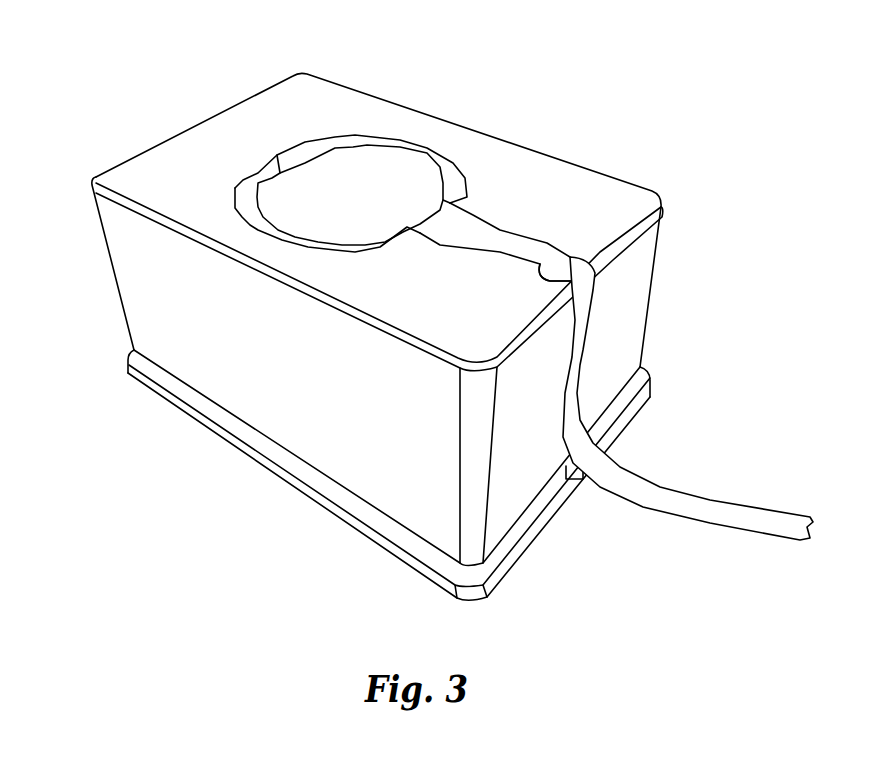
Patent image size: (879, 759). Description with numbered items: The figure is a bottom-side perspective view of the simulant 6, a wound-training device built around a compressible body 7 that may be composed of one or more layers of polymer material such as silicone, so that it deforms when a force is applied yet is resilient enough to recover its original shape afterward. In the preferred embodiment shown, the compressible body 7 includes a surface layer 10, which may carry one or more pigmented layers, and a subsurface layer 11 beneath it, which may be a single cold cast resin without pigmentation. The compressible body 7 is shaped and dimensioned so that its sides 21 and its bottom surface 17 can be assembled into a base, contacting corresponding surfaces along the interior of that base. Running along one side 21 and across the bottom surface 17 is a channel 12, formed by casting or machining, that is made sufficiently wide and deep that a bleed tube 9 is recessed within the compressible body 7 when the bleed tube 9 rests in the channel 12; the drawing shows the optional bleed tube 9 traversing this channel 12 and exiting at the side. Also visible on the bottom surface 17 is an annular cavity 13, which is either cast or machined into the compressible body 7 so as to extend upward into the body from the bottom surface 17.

The simulant 6 is at (423, 303).
The compressible body 7 is at (379, 303).
The bleed tube 9 is at (720, 508).
The surface layer 10 is at (86, 337).
The subsurface layer 11 is at (348, 286).
The channel 12 is at (585, 382).
The annular cavity 13 is at (250, 186).
The bottom surface 17 is at (282, 102).
The sides 21 is at (217, 112).